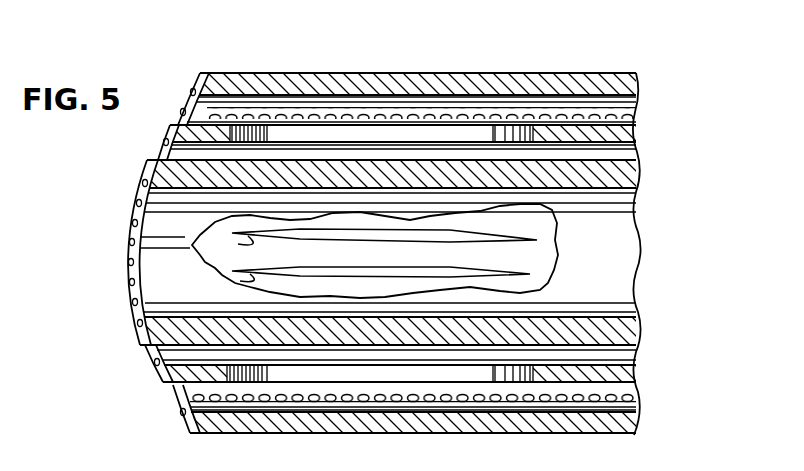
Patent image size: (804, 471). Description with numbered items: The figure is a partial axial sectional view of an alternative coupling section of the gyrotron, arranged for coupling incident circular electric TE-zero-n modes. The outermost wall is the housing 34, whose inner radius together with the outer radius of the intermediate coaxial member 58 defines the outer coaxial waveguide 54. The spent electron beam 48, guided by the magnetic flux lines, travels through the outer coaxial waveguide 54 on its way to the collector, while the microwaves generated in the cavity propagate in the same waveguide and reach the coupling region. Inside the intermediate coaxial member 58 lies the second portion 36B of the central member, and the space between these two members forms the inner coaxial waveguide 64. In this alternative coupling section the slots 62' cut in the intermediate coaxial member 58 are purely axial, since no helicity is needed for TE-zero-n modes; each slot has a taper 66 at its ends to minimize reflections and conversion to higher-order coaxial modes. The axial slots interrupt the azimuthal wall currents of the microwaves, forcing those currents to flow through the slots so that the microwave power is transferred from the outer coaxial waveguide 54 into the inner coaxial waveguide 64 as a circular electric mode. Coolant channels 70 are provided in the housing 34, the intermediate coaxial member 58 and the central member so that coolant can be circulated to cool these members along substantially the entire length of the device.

The housing 34 is at (635, 80).
The outer coaxial waveguide 54 is at (638, 100).
The electron beam 48 is at (572, 108).
The intermediate coaxial member 58 is at (638, 128).
The inner coaxial waveguide 64 is at (637, 152).
The second portion of the central member 36B is at (638, 167).
The coolant channels 70 is at (133, 309).
The slots 62' is at (451, 239).
The taper 66 is at (250, 270).